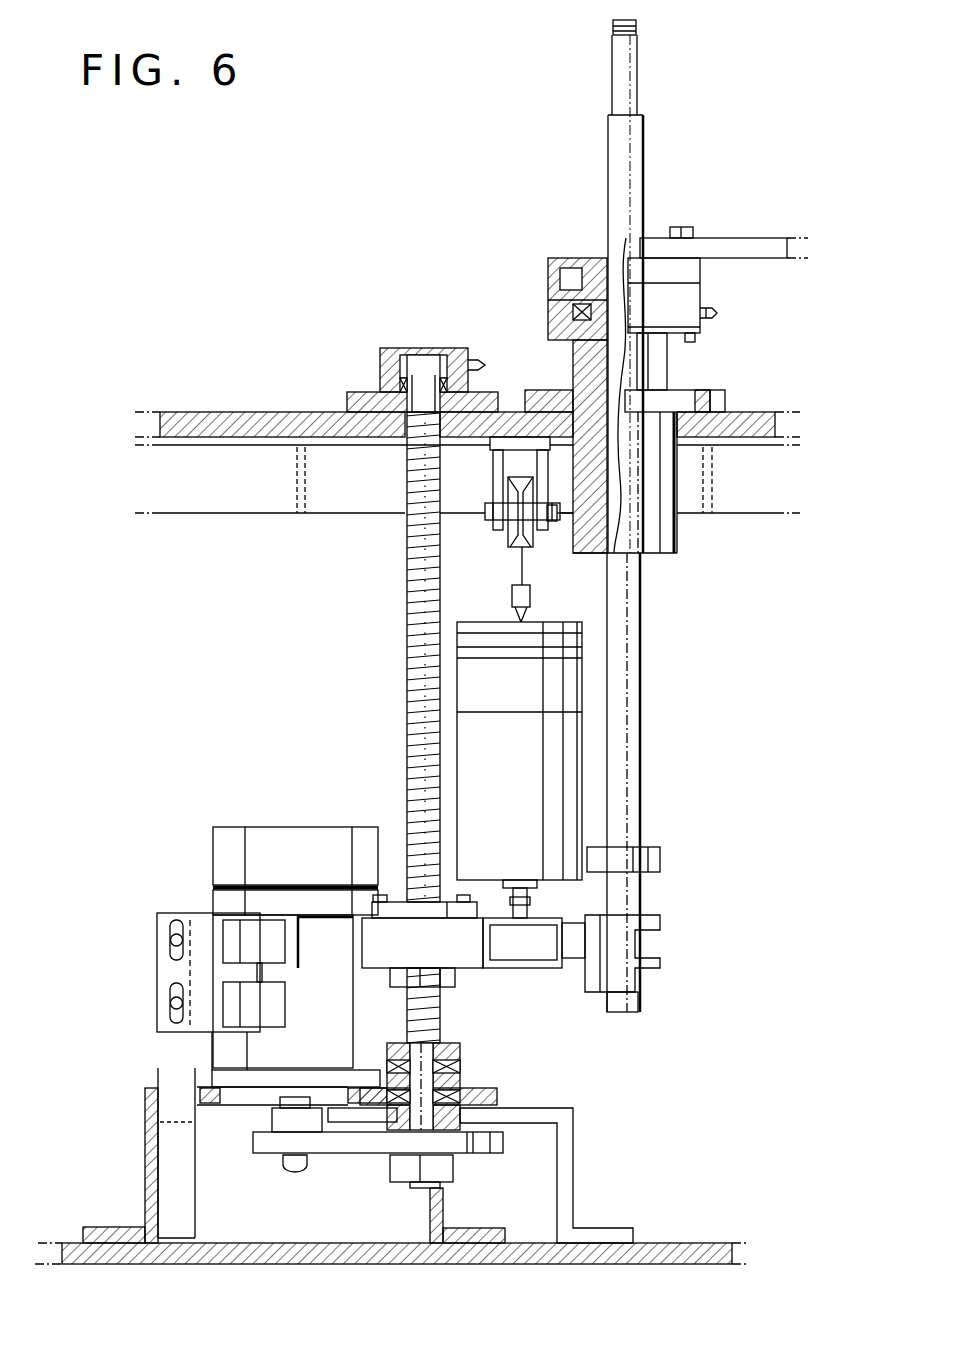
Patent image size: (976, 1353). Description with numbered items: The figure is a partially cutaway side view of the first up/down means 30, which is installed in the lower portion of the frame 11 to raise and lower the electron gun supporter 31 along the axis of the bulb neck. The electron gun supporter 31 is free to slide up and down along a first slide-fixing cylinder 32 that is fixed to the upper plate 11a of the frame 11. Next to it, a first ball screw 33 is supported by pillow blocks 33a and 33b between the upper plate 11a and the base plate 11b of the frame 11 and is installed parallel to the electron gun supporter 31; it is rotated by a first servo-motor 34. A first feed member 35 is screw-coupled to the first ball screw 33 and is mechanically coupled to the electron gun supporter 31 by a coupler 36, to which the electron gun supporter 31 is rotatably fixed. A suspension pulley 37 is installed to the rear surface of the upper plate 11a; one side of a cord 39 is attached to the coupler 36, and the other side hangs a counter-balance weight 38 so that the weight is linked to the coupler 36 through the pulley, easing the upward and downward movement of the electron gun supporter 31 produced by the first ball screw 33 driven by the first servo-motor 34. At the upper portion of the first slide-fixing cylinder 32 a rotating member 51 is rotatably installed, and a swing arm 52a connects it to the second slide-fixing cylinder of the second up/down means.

The frame 11 is at (305, 375).
The upper plate 11a is at (163, 443).
The base plate 11b is at (68, 1243).
The first up/down means 30 is at (280, 650).
The electron gun supporter 31 is at (627, 790).
The first slide-fixing cylinder 32 is at (718, 389).
The first ball screw 33 is at (405, 660).
The pillow block 33a is at (396, 348).
The pillow block 33b is at (465, 1078).
The first servo-motor 34 is at (270, 835).
The first feed member 35 is at (450, 943).
The coupler 36 is at (538, 945).
The suspension pulley 37 is at (540, 545).
The counter-balance weight 38 is at (583, 815).
The cord 39 is at (522, 563).
The rotating member 51 is at (568, 258).
The swing arm 52a is at (745, 240).